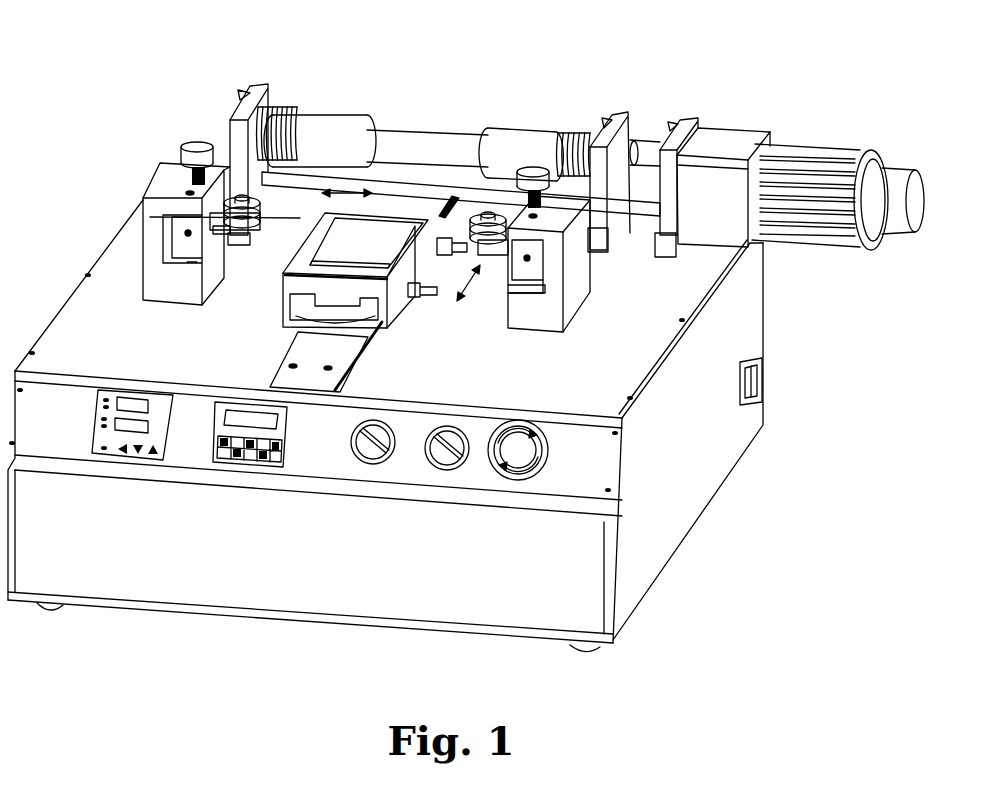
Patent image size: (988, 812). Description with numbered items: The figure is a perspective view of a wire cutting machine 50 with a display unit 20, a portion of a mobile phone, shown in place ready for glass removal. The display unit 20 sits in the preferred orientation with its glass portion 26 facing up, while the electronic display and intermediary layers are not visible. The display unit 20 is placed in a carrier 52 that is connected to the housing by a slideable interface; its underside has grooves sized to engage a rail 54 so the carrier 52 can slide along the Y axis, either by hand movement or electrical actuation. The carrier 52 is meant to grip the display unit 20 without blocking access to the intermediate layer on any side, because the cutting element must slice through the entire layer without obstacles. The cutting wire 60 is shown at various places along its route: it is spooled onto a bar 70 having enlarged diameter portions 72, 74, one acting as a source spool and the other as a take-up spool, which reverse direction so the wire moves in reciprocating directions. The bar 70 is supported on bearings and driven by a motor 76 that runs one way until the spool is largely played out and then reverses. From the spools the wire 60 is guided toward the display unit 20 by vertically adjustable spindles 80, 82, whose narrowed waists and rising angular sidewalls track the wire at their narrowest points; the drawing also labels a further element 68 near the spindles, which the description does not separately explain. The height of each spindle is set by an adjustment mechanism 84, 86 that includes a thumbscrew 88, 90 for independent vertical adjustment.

The wire cutting machine 50 is at (636, 67).
The display unit 20 is at (337, 258).
The glass portion 26 is at (366, 243).
The carrier 52 is at (393, 300).
The rail 54 is at (343, 353).
The cutting wire 60 is at (290, 122).
The pulley 68 is at (474, 232).
The bar 70 is at (326, 113).
The enlarged diameter portion 72 is at (353, 118).
The enlarged diameter portion 74 is at (510, 127).
The motor 76 is at (803, 143).
The vertically adjustable spindle 80 is at (240, 198).
The vertically adjustable spindle 82 is at (548, 235).
The adjustment mechanism 84 is at (137, 228).
The adjustment mechanism 86 is at (577, 264).
The thumbscrew 88 is at (192, 146).
The thumbscrew 90 is at (527, 165).